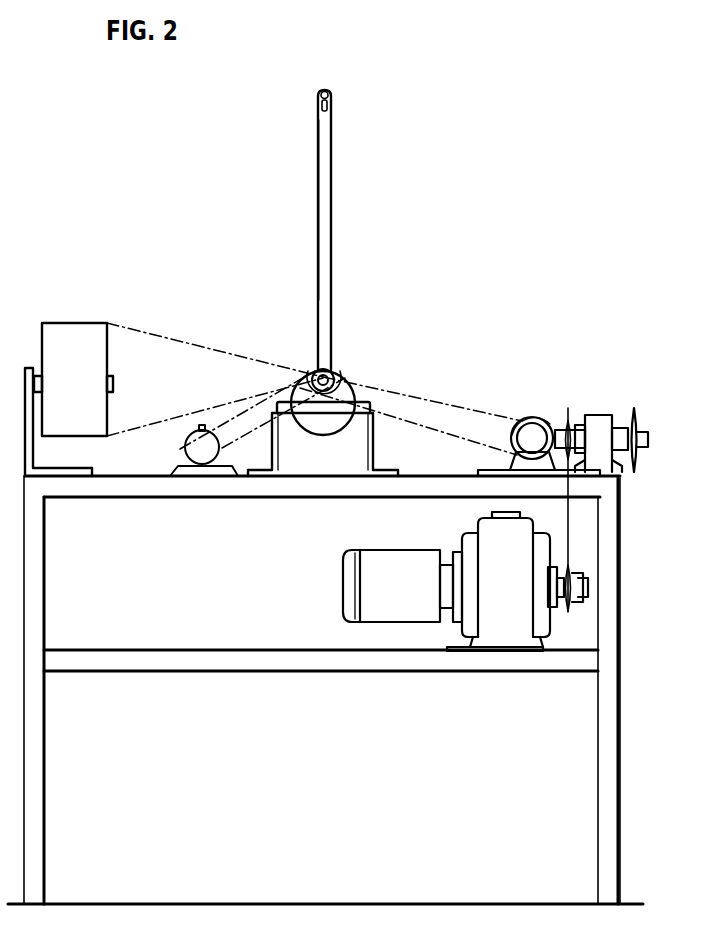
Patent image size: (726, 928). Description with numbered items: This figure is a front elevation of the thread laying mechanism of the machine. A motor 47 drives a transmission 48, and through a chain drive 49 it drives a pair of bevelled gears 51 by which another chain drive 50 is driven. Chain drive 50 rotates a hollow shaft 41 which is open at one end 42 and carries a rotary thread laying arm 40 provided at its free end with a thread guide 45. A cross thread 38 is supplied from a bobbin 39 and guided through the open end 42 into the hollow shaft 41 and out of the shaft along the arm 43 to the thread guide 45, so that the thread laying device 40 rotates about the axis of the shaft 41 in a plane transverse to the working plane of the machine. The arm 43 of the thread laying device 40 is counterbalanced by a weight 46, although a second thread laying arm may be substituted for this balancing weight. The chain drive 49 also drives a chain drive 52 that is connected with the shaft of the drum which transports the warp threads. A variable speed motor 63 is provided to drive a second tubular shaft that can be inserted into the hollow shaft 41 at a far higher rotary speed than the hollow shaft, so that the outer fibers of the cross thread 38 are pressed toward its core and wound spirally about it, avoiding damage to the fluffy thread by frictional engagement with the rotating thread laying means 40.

The cross thread 38 is at (208, 350).
The bobbin 39 is at (82, 370).
The rotary thread laying arm 40 is at (332, 186).
The hollow shaft 41 is at (318, 371).
The open end 42 is at (334, 370).
The arm 43 is at (325, 258).
The thread guide 45 is at (333, 103).
The weight 46 is at (333, 414).
The motor 47 is at (412, 590).
The transmission 48 is at (518, 590).
The chain drive 49 is at (571, 548).
The chain drive 50 is at (473, 406).
The pair of bevelled gears 51 is at (545, 416).
The chain drive 52 is at (633, 417).
The variable speed motor 63 is at (214, 452).